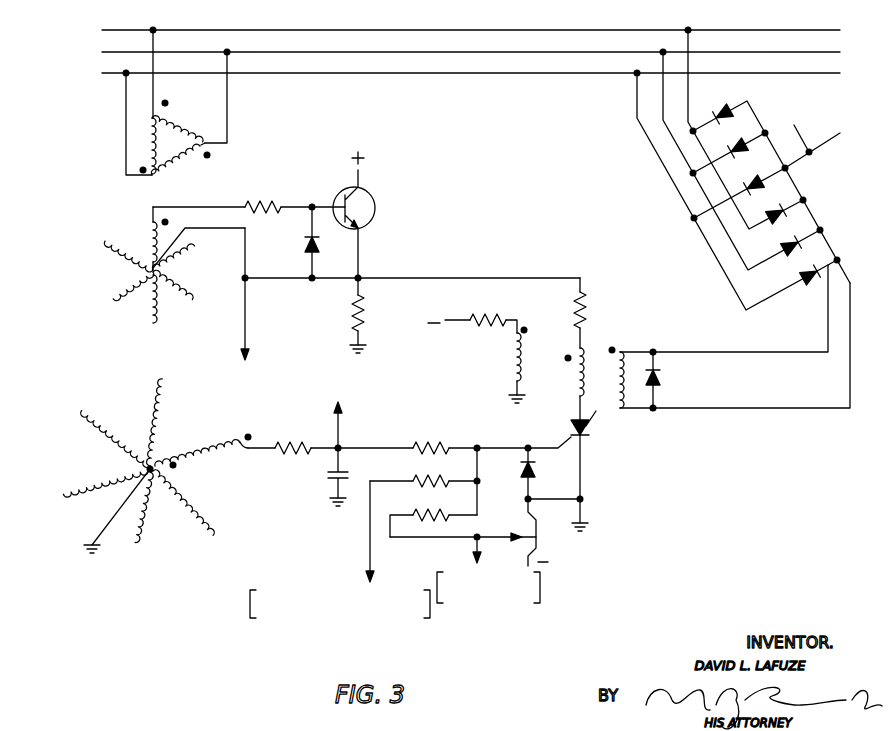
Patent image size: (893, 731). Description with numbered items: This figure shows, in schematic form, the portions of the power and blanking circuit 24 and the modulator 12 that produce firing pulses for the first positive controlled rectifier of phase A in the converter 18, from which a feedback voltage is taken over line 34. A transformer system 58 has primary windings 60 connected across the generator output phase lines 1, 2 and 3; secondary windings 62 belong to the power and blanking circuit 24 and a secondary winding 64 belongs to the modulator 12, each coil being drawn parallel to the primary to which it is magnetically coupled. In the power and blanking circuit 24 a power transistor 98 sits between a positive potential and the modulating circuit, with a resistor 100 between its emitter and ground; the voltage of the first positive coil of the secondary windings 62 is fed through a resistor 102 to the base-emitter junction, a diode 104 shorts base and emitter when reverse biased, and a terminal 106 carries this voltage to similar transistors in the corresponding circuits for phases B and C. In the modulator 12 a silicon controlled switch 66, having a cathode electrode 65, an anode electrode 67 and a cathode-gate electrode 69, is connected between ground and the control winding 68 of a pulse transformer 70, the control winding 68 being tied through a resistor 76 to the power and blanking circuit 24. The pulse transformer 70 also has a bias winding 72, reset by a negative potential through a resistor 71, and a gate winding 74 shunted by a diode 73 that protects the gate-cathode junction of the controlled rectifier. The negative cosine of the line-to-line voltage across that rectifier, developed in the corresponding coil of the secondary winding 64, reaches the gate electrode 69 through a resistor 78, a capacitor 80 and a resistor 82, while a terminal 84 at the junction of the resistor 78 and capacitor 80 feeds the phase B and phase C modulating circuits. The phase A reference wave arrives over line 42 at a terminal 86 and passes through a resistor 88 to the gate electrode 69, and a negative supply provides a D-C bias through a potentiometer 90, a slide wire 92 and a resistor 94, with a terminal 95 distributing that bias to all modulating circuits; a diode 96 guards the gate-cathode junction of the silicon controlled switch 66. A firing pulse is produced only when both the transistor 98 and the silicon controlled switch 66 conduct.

The power source output phase line 1 is at (462, 73).
The power source output phase line 2 is at (462, 52).
The power source output phase line 3 is at (462, 30).
The transformer system 58 is at (100, 215).
The primary windings 60 is at (176, 102).
The secondary windings 62 is at (136, 327).
The secondary winding 64 is at (105, 530).
The resistor 102 is at (266, 204).
The power and blanking circuit 24 is at (316, 192).
The power transistor 98 is at (371, 197).
The diode 104 is at (305, 245).
The resistor 100 is at (350, 310).
The terminal 106 is at (252, 356).
The resistor 71 is at (470, 318).
The bias winding 72 is at (513, 360).
The resistor 76 is at (585, 322).
The control winding 68 is at (577, 380).
The anode electrode 67 is at (580, 412).
The pulse transformer 70 is at (651, 338).
The gate winding 74 is at (618, 378).
The diode 73 is at (662, 378).
The resistor 78 is at (295, 445).
The terminal 84 is at (345, 410).
The capacitor 80 is at (331, 480).
The resistor 82 is at (420, 444).
The resistor 88 is at (412, 478).
The resistor 94 is at (413, 512).
The line 42 is at (368, 530).
The terminal 86 is at (365, 576).
The cathode-gate electrode 69 is at (561, 444).
The silicon controlled switch 66 is at (591, 429).
The cathode electrode 65 is at (584, 451).
The diode 96 is at (537, 470).
The modulator 12 is at (616, 498).
The slide wire 92 is at (520, 531).
The potentiometer 90 is at (540, 541).
The terminal 95 is at (470, 561).
The converter 18 is at (743, 170).
The feedback line 34 is at (797, 124).